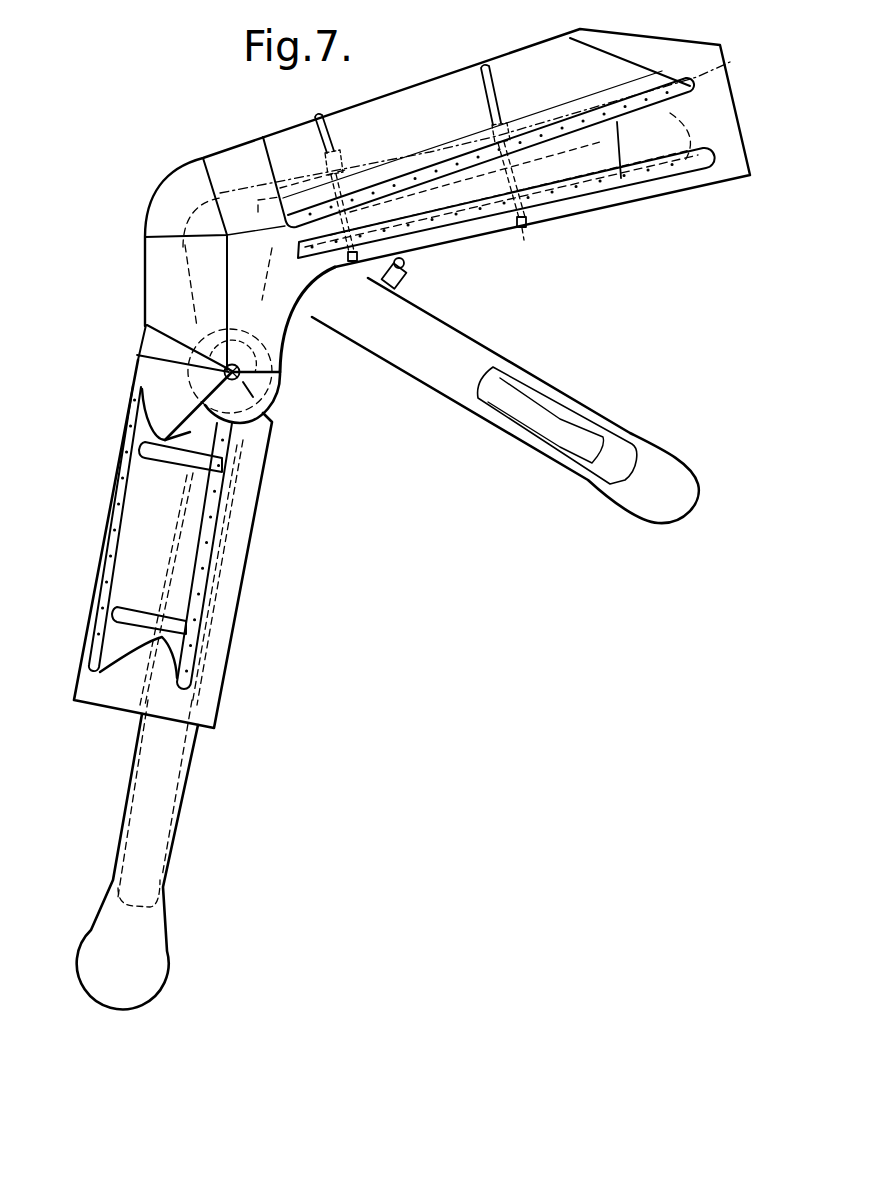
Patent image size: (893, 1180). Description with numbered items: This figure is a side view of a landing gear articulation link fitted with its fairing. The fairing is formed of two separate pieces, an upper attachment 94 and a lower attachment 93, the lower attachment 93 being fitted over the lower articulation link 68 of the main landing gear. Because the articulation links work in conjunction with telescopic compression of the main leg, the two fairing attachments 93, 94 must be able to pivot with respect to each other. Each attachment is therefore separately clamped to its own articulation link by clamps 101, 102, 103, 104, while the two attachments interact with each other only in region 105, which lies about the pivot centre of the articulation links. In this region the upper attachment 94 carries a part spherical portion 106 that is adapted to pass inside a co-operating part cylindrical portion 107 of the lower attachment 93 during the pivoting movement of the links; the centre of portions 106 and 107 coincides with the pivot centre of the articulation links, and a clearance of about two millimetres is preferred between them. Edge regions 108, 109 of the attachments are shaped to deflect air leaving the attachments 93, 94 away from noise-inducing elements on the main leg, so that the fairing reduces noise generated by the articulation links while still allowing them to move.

The upper attachment 94 is at (233, 148).
The clamp 103 is at (357, 256).
The clamp 104 is at (521, 228).
The edge region 108 is at (657, 188).
The region 105 is at (147, 328).
The part spherical portion 106 is at (147, 347).
The part cylindrical portion 107 is at (138, 370).
The edge region 109 is at (242, 528).
The lower attachment 93 is at (112, 510).
The clamp 102 is at (195, 450).
The clamp 101 is at (200, 630).
The lower articulation link 68 is at (180, 807).